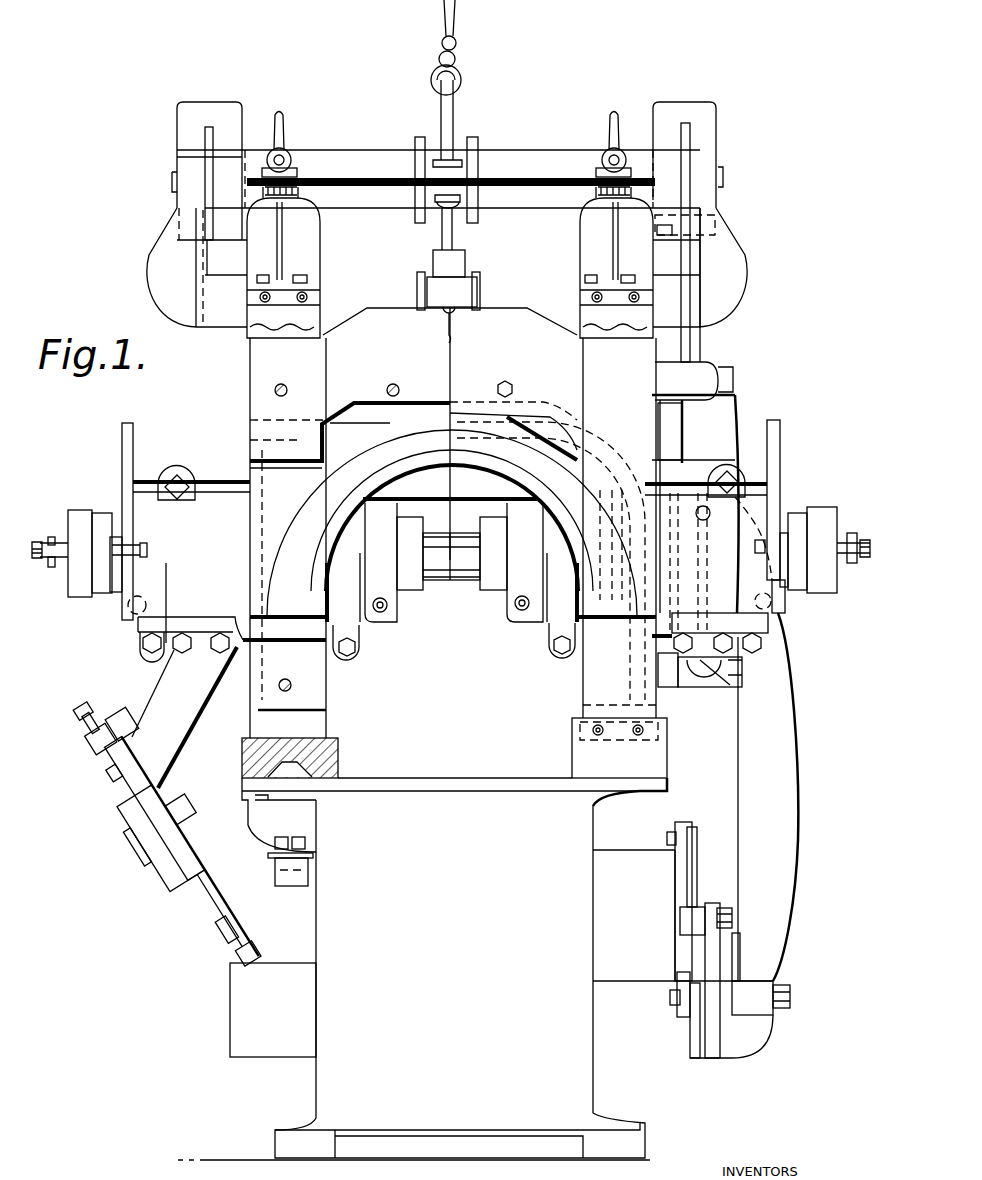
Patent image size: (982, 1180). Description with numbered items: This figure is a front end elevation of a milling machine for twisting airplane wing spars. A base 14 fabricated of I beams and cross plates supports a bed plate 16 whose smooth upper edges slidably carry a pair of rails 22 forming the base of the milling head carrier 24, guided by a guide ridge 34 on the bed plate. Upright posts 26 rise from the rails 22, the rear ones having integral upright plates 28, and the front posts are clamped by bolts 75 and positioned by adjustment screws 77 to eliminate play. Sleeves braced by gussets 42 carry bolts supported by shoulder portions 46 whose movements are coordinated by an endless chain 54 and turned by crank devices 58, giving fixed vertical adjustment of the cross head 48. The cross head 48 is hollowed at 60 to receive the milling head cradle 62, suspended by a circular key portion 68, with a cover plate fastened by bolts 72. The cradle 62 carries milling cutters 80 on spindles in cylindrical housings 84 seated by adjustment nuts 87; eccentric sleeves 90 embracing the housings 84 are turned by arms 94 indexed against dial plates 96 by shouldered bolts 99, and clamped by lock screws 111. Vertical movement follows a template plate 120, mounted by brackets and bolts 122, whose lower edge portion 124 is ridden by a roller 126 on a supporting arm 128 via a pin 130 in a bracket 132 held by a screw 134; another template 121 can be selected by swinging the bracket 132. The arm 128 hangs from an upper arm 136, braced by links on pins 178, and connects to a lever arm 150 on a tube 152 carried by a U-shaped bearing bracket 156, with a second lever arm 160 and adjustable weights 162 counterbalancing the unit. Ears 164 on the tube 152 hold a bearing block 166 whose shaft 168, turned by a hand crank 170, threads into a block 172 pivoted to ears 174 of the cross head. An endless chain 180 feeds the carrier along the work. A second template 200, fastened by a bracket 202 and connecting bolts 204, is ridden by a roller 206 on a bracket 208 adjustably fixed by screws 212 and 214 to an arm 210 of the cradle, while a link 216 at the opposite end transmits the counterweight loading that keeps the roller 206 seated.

The base 14 is at (454, 968).
The bed plate 16 is at (455, 791).
The rails 22 is at (342, 752).
The milling head carrier 24 is at (242, 361).
The upright posts 26 is at (305, 720).
The upright plates 28 is at (250, 299).
The guide ridge 34 is at (296, 777).
The gussets 42 is at (282, 232).
The shoulder portions 46 is at (287, 171).
The cross head 48 is at (262, 385).
The endless chain 54 is at (346, 177).
The crank devices 58 is at (286, 121).
The central hollow 60 is at (250, 419).
The milling head cradle 62 is at (208, 496).
The circular key portion 68 is at (302, 556).
The bolts 72 is at (392, 386).
The bolts 75 is at (307, 274).
The adjustment screws 77 is at (308, 296).
The milling cutters 80 is at (463, 580).
The cylindrical housings 84 is at (88, 515).
The adjustment nuts 87 is at (45, 542).
The eccentric sleeves 90 is at (143, 647).
The laterally extending arm 94 is at (118, 598).
The dial plate 96 is at (122, 430).
The shouldered bolts 99 is at (50, 567).
The lock screws 111 is at (518, 606).
The template plate 120 is at (690, 870).
The vertical movement template 121 is at (690, 1030).
The brackets and bolts 122 is at (668, 838).
The lower edge portion 124 is at (682, 917).
The roller 126 is at (682, 930).
The supporting arm 128 is at (780, 830).
The pin 130 is at (735, 920).
The bracket 132 is at (712, 1048).
The screw 134 is at (790, 991).
The upper arm 136 is at (690, 340).
The lever arm 150 is at (690, 142).
The tube 152 is at (498, 150).
The U-shaped bearing bracket 156 is at (163, 245).
The second lever arm 160 is at (205, 153).
The adjustable weights 162 is at (180, 118).
The ears 164 is at (416, 165).
The bearing block 166 is at (438, 205).
The shaft 168 is at (462, 80).
The hand crank 170 is at (454, 18).
The block 172 is at (466, 258).
The ears 174 is at (417, 292).
The pins 178 is at (733, 382).
The endless chain 180 is at (292, 886).
The second template 200 is at (207, 900).
The bracket 202 is at (221, 992).
The connecting bolts 204 is at (222, 935).
The roller 206 is at (177, 868).
The bracket 208 is at (137, 793).
The arm 210 is at (172, 680).
The screw 212 is at (106, 771).
The screw 214 is at (80, 718).
The link 216 is at (705, 687).